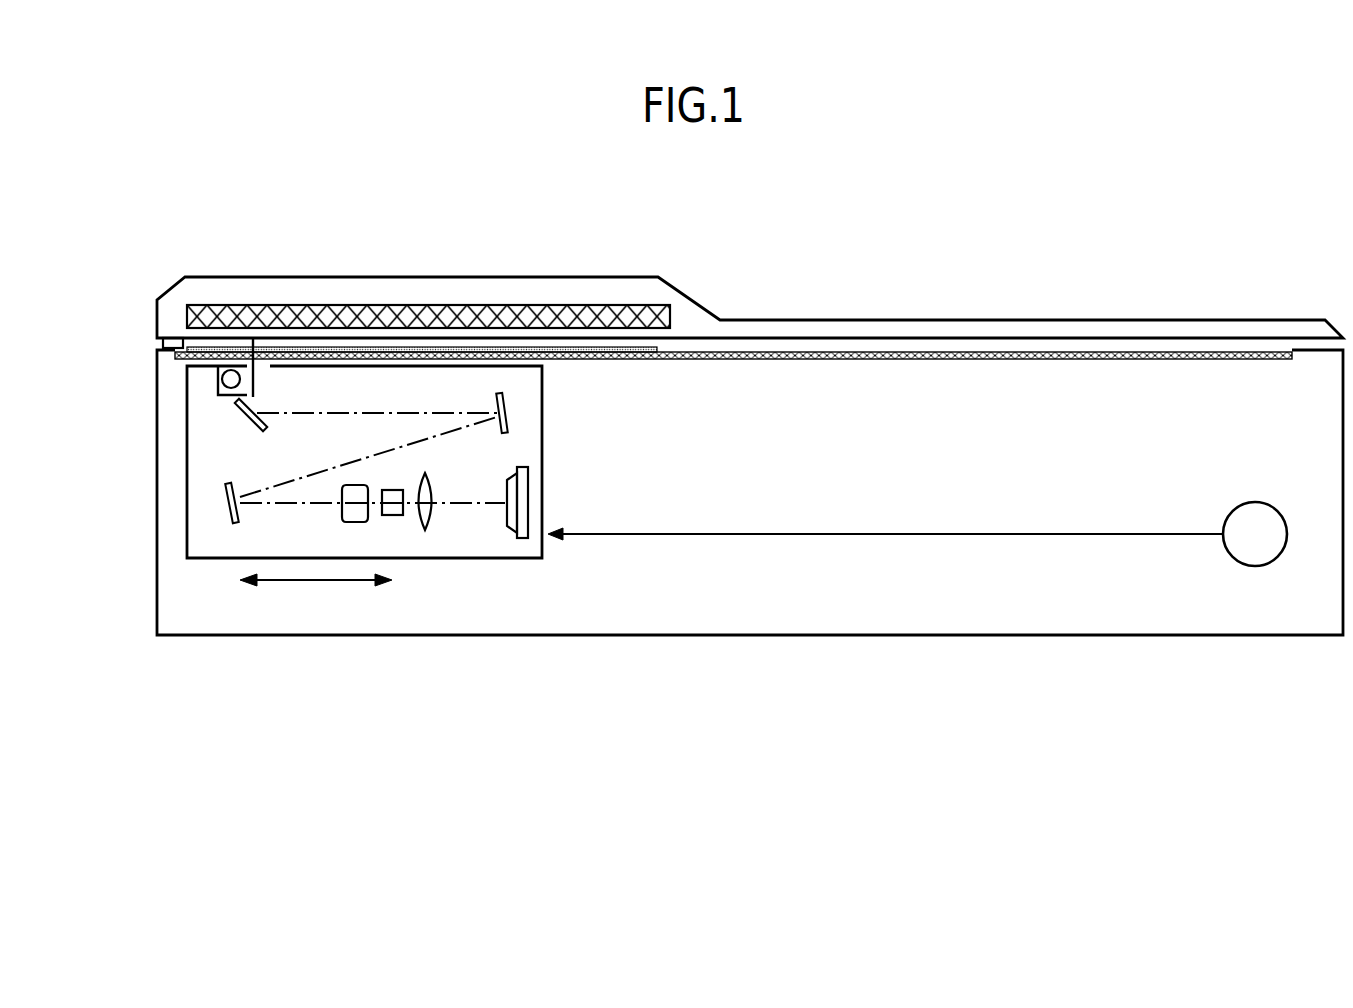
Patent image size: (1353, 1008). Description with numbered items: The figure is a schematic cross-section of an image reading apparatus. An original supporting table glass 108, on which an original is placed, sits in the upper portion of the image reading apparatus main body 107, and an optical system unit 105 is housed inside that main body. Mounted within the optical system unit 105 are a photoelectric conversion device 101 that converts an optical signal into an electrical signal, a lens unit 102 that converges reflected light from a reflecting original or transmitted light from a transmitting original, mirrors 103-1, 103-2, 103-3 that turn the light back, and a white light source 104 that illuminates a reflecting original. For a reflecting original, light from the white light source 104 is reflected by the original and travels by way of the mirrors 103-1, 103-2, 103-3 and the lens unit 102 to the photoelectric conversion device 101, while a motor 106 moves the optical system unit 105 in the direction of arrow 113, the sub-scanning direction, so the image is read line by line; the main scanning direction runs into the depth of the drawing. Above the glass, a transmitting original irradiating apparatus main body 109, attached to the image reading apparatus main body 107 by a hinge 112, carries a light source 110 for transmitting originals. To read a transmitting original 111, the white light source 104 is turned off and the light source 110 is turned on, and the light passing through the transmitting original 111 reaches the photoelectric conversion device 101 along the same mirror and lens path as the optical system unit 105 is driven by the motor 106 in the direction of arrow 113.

The photoelectric conversion device 101 is at (530, 490).
The lens unit 102 is at (342, 530).
The mirror 103-1 is at (247, 418).
The mirror 103-2 is at (505, 405).
The mirror 103-3 is at (228, 507).
The white light source 104 is at (215, 370).
The optical system unit 105 is at (187, 465).
The motor 106 is at (1255, 567).
The image reading apparatus main body 107 is at (157, 590).
The original supporting table glass 108 is at (1184, 352).
The transmitting original irradiating apparatus main body 109 is at (1030, 320).
The light source for the transmitting original 110 is at (625, 305).
The transmitting original 111 is at (485, 347).
The hinge 112 is at (165, 344).
The arrow 113 is at (313, 583).